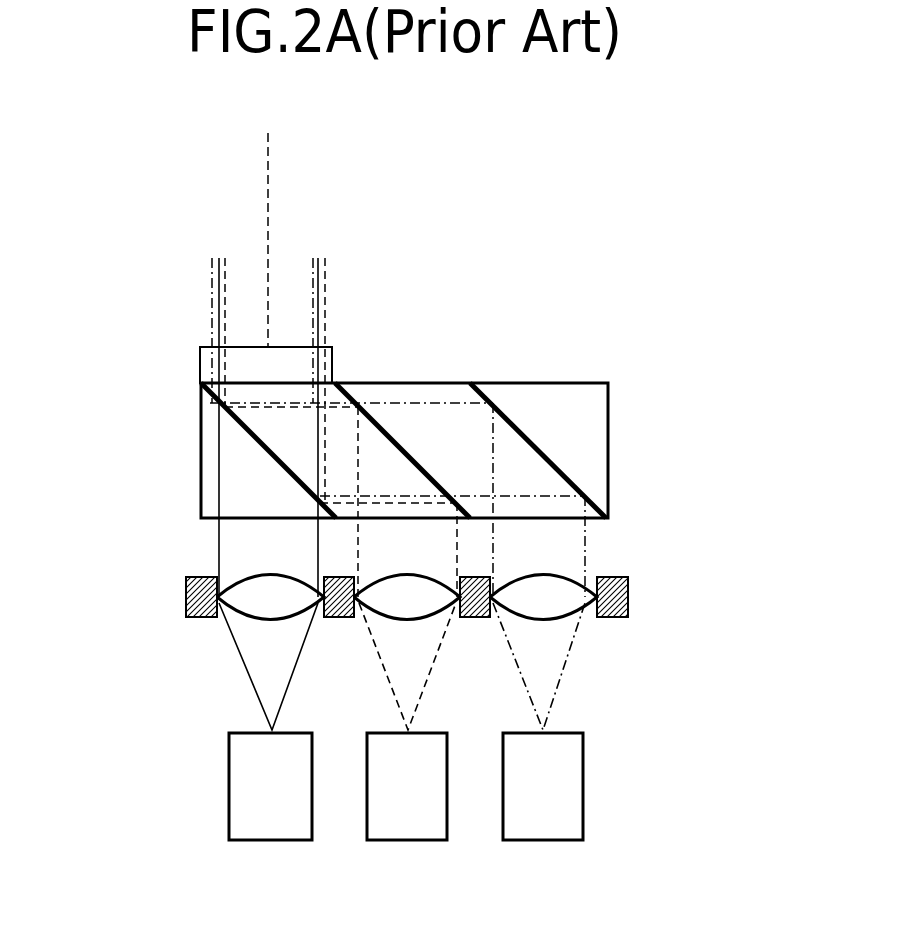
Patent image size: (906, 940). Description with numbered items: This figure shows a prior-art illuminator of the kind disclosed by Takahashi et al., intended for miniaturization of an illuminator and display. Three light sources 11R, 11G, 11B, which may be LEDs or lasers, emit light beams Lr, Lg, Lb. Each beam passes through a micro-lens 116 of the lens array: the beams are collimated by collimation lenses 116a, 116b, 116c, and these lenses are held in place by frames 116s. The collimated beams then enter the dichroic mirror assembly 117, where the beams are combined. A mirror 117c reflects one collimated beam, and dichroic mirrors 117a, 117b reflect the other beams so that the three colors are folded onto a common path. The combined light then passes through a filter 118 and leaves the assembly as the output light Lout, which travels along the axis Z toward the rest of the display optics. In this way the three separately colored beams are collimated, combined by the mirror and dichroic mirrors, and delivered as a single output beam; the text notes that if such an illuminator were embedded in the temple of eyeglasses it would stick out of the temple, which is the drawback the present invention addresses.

The optical axis Z is at (277, 158).
The output light Lout is at (340, 285).
The filter 118 is at (205, 367).
The dichroic mirrors 117 is at (413, 462).
The dichroic mirror 117a is at (262, 441).
The dichroic mirror 117b is at (400, 440).
The mirror 117c is at (527, 440).
The micro-lenses 116 is at (410, 612).
The frames 116s is at (186, 593).
The collimation lens 116a is at (267, 607).
The collimation lens 116b is at (410, 583).
The collimation lens 116c is at (552, 607).
The light beam Lr is at (242, 667).
The light beam Lg is at (433, 660).
The light beam Lb is at (560, 687).
The light source 11R is at (267, 812).
The light source 11G is at (405, 810).
The light source 11B is at (540, 810).